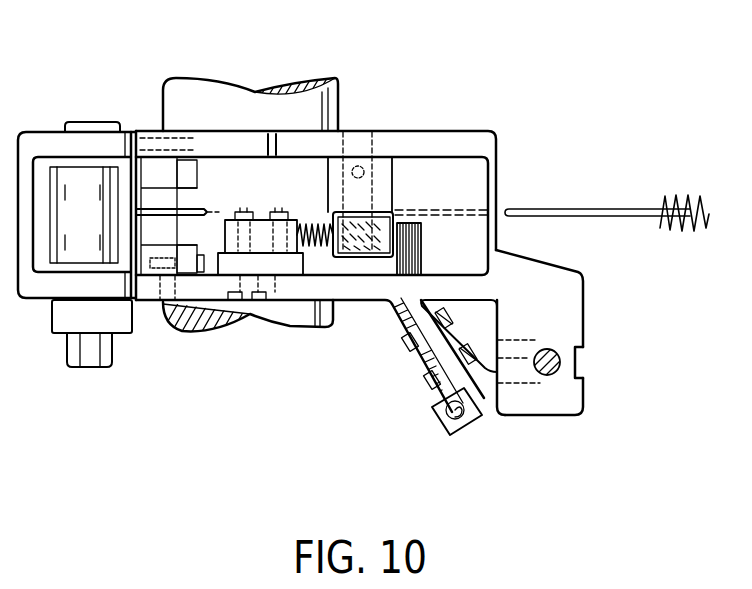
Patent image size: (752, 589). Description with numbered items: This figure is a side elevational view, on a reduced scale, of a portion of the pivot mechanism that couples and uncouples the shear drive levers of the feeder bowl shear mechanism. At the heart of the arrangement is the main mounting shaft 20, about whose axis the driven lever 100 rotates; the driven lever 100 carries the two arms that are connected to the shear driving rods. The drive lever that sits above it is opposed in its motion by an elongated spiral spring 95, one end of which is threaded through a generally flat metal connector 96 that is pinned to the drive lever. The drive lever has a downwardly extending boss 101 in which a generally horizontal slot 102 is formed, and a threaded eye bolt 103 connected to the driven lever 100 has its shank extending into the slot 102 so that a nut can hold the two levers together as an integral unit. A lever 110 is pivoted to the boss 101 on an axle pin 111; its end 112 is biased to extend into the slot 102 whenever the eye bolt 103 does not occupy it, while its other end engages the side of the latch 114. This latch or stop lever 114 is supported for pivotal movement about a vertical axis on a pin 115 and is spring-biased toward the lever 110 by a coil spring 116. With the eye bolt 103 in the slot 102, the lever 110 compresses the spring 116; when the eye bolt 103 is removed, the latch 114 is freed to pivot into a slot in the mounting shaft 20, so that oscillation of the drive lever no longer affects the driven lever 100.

The main mounting shaft 20 is at (243, 100).
The driven lever 100 is at (489, 131).
The pin 115 is at (365, 195).
The coil spring 116 is at (312, 222).
The latch 114 is at (393, 223).
The flat metal connector 96 is at (563, 208).
The spiral spring 95 is at (670, 203).
The boss 101 is at (565, 305).
The eye bolt 103 is at (582, 356).
The end of lever 112 is at (561, 362).
The slot 102 is at (583, 378).
The lever 110 is at (420, 388).
The axle pin 111 is at (478, 430).